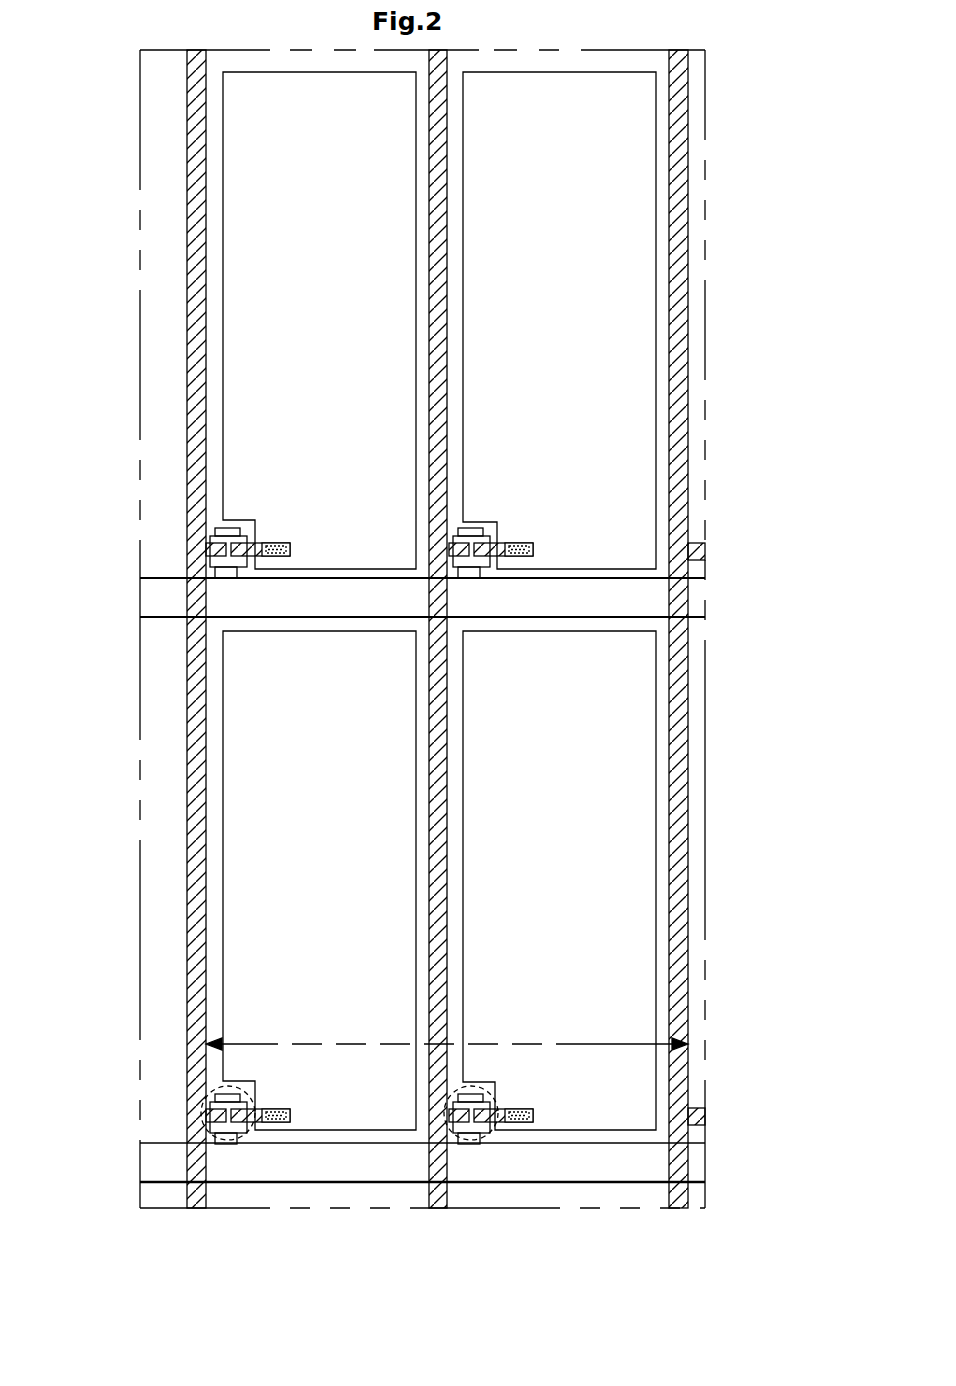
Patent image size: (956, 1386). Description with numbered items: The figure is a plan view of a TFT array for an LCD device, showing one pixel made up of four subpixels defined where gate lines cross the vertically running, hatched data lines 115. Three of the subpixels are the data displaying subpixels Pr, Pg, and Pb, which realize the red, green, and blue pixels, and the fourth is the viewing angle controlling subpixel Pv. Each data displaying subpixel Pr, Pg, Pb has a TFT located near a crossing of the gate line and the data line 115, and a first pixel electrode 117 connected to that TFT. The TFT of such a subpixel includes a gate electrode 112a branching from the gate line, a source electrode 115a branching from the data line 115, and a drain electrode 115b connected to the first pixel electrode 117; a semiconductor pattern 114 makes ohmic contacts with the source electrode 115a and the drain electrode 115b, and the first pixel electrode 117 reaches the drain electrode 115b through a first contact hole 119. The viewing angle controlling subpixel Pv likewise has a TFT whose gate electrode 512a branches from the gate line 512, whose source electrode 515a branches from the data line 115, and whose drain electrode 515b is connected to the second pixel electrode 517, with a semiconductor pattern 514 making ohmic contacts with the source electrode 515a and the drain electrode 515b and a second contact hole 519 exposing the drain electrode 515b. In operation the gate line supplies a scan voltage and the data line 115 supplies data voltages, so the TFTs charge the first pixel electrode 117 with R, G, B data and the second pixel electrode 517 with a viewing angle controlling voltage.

The data line 115 is at (187, 721).
The first pixel electrode 117 is at (657, 755).
The gate line 512 is at (162, 1163).
The second pixel electrode 517 is at (260, 803).
The semiconductor pattern 514 is at (206, 1100).
The gate electrode 512a is at (228, 1142).
The source electrode 515a is at (206, 1120).
The drain electrode 515b is at (291, 1116).
The second contact hole 519 is at (272, 1124).
The semiconductor pattern 114 is at (460, 1095).
The gate electrode 112a is at (472, 1133).
The source electrode 115a is at (449, 1122).
The drain electrode 115b is at (534, 1115).
The first contact hole 119 is at (504, 1110).
The thin film transistor TFT is at (220, 1145).
The red data displaying subpixel Pr is at (246, 206).
The green data displaying subpixel Pg is at (640, 160).
The blue data displaying subpixel Pb is at (638, 903).
The viewing angle controlling subpixel Pv is at (242, 880).